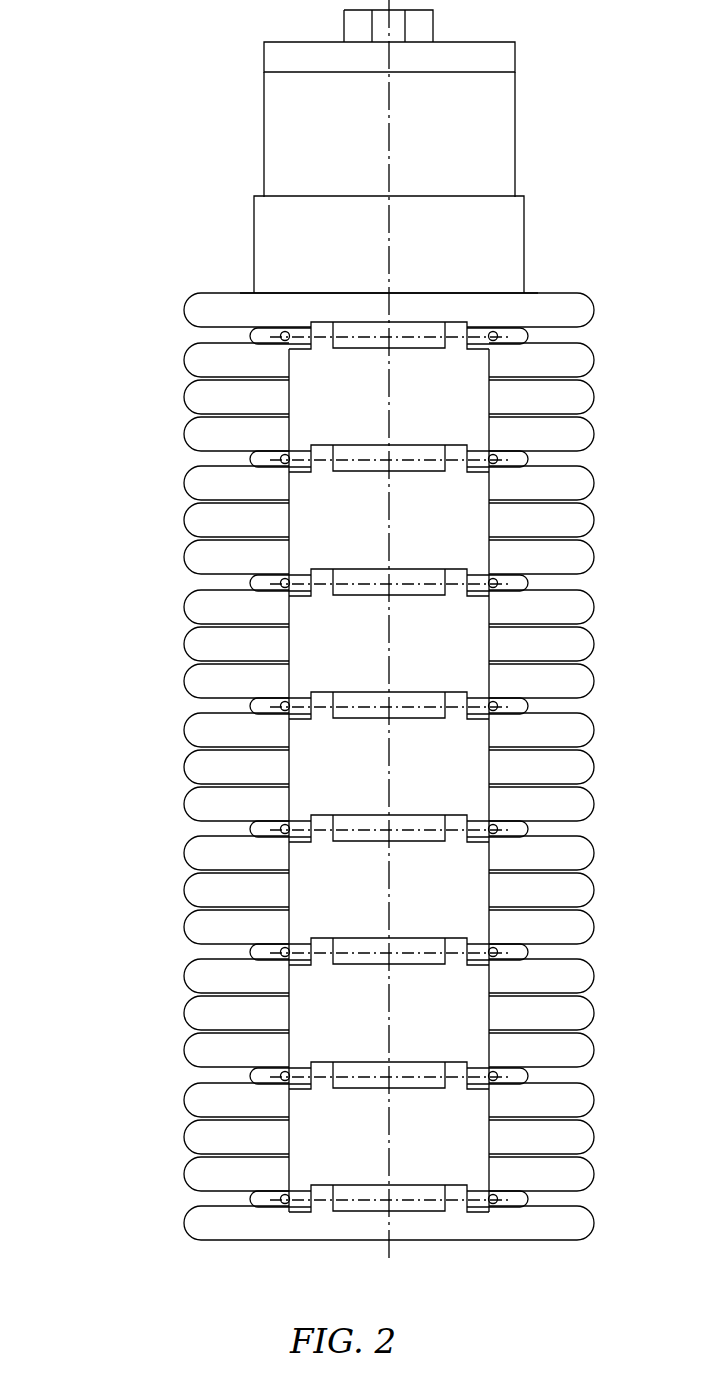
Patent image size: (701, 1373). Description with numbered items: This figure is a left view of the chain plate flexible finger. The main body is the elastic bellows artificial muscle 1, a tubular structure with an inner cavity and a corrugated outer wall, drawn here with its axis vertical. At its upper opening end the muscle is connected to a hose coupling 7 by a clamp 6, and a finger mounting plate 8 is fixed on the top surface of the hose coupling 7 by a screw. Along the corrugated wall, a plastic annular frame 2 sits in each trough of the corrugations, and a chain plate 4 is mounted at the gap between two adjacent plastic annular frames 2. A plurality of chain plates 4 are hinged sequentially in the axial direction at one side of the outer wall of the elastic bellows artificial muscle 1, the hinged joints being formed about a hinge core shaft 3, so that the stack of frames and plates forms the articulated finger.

The elastic bellows artificial muscle 1 is at (203, 1102).
The plastic annular frame 2 is at (258, 951).
The hinge core shaft 3 is at (263, 945).
The chain plate 4 is at (372, 893).
The clamp 6 is at (260, 264).
The hose coupling 7 is at (293, 157).
The finger mounting plate 8 is at (285, 53).